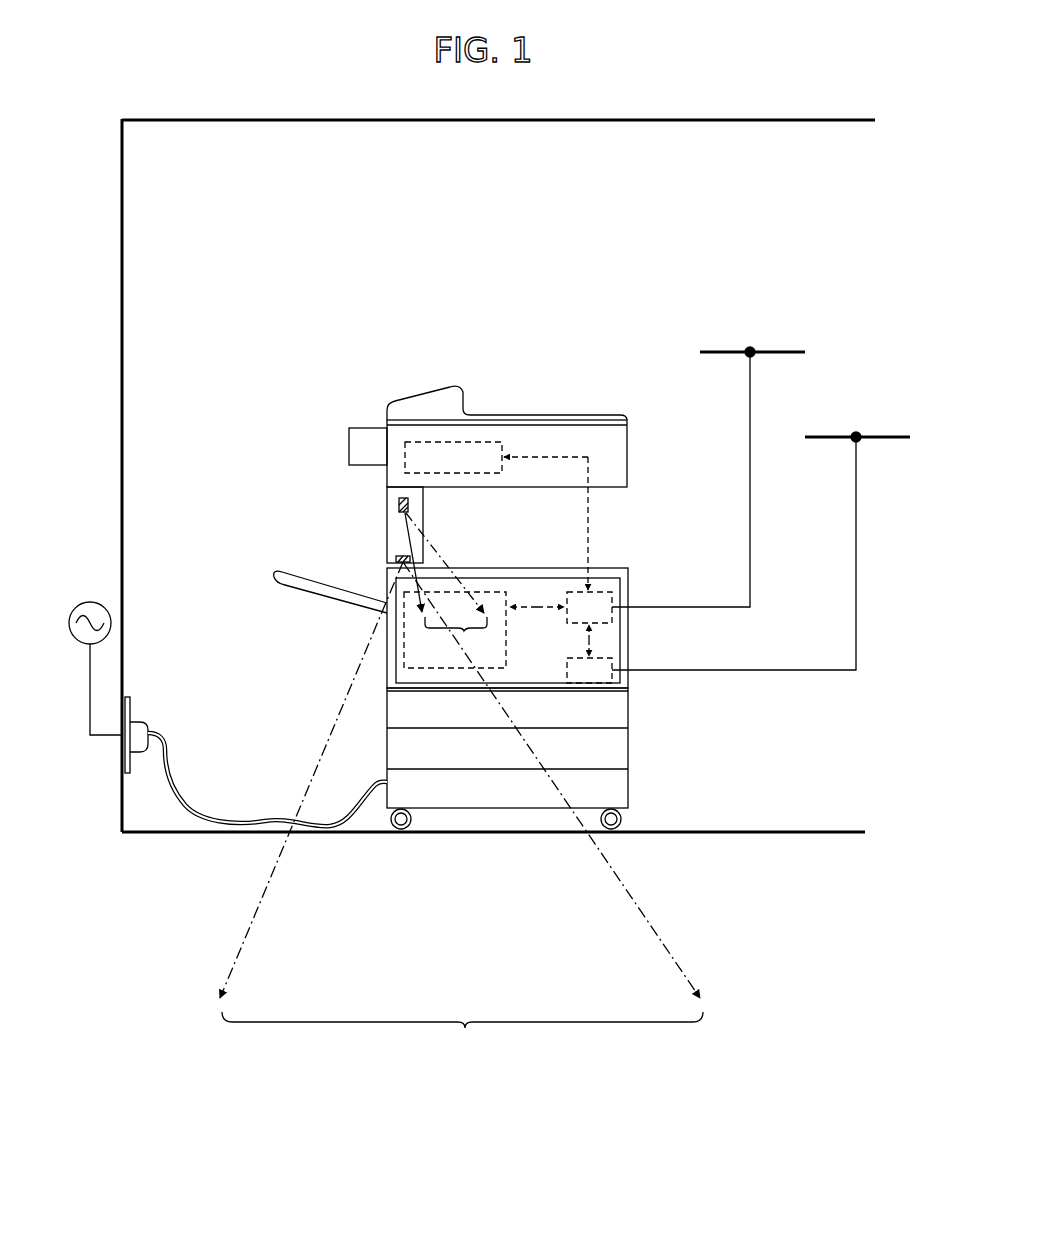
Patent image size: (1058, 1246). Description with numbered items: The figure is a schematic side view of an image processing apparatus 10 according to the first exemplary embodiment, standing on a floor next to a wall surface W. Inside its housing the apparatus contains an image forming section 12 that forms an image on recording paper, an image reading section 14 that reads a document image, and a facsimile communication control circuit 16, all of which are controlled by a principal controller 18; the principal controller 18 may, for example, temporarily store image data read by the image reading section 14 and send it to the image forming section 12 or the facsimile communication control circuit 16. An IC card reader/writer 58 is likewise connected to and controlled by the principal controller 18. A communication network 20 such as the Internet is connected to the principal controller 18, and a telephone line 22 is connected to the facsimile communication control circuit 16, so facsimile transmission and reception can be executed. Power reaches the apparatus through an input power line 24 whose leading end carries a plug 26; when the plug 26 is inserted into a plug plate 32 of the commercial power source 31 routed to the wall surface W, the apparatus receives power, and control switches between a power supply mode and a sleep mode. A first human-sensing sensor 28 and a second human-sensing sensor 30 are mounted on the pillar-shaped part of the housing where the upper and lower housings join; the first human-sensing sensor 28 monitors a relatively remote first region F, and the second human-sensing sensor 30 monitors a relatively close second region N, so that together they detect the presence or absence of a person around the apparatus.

The image processing apparatus 10 is at (396, 373).
The image forming section 12 is at (432, 668).
The image reading section 14 is at (405, 468).
The facsimile communication control circuit 16 is at (612, 662).
The principal controller 18 is at (612, 596).
The communication network 20 is at (745, 349).
The telephone line 22 is at (878, 436).
The input power line 24 is at (190, 812).
The plug 26 is at (150, 733).
The first human-sensing sensor 28 is at (396, 558).
The second human-sensing sensor 30 is at (398, 506).
The commercial power source 31 is at (90, 602).
The plug plate 32 is at (130, 705).
The IC card reader/writer 58 is at (349, 441).
The wall surface W is at (124, 345).
The second region N is at (464, 631).
The first region F is at (461, 809).